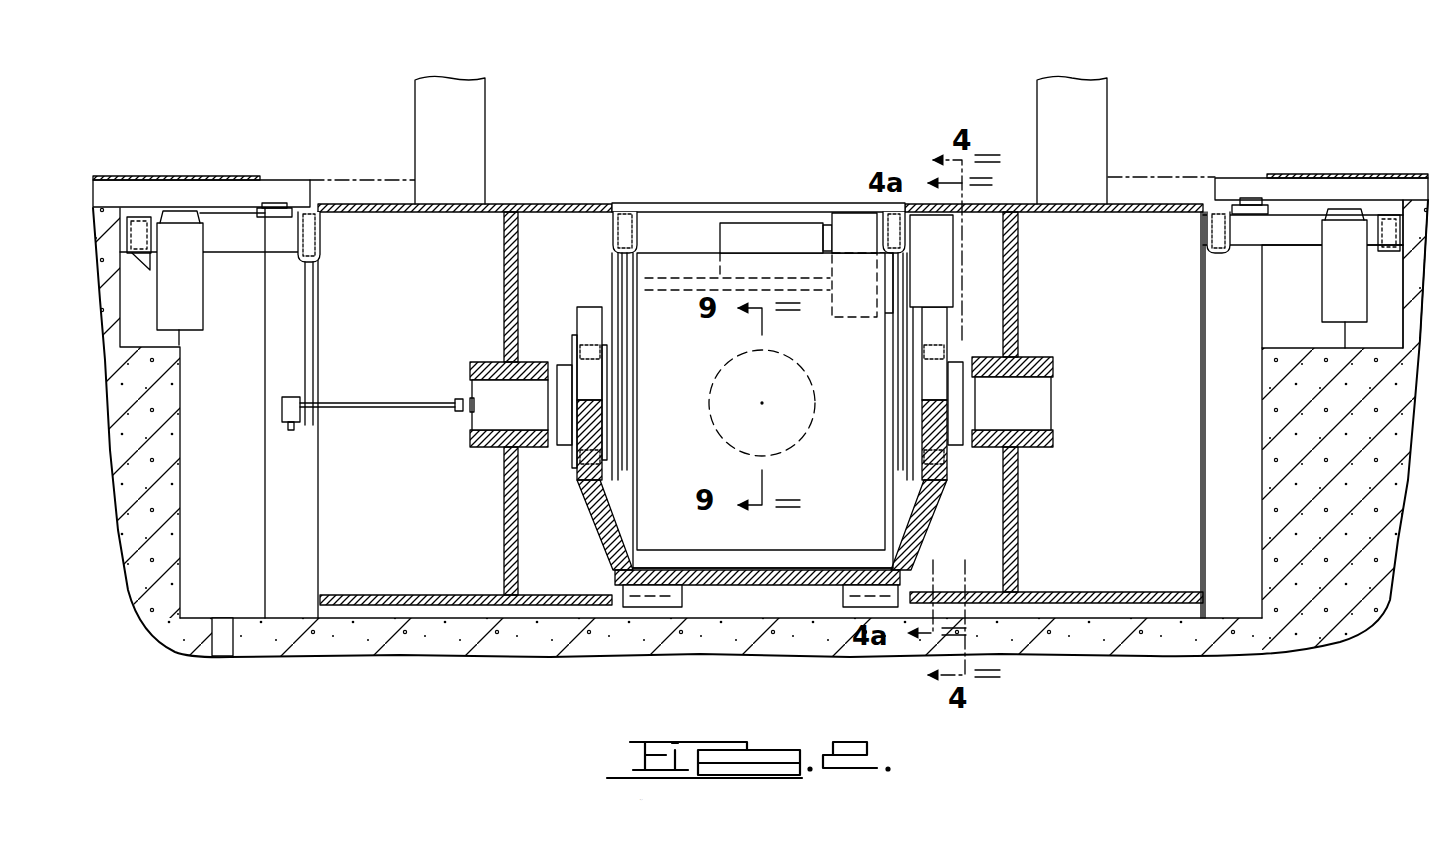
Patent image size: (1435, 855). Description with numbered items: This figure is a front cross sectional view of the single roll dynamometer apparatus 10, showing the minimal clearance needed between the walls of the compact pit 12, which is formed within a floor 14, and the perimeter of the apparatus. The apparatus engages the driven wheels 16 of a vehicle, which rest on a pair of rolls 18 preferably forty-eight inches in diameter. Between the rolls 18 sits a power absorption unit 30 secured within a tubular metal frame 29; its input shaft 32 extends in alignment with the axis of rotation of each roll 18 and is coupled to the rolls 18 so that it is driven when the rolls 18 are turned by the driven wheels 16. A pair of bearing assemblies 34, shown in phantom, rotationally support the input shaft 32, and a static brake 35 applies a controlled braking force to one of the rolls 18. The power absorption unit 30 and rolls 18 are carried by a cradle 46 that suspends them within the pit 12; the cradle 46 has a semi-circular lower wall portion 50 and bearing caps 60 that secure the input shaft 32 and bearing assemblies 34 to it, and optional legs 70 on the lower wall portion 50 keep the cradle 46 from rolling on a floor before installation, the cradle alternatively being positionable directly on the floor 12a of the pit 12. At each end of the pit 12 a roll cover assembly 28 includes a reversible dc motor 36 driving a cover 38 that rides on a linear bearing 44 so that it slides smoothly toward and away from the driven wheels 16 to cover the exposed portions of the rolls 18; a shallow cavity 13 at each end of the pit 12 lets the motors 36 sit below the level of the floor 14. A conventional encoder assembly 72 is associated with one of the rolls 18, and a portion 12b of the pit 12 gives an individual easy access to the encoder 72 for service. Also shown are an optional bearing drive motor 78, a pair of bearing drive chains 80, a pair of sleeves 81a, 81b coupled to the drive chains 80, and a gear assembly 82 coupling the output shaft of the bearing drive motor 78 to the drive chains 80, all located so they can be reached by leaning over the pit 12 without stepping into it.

The dynamometer apparatus 10 is at (746, 182).
The pit 12 is at (1242, 590).
The floor of the pit 12a is at (1100, 622).
The portion of the pit 12b is at (196, 604).
The shallow cavity 13 is at (162, 345).
The floor 14 is at (1416, 199).
The driven wheels 16 is at (428, 127).
The rolls 18 is at (388, 595).
The roll cover assemblies 28 is at (130, 178).
The tubular metal frame 29 is at (622, 205).
The power absorption unit 30 is at (690, 456).
The input shaft 32 is at (470, 372).
The bearing assemblies 34 is at (582, 478).
The static brake 35 is at (931, 261).
The reversible dc motor 36 is at (763, 278).
The cover 38 is at (178, 178).
The linear bearing 44 is at (150, 214).
The cradle 46 is at (702, 582).
The lower wall portion 50 is at (795, 576).
The bearing caps 60 is at (580, 312).
The legs 70 is at (646, 605).
The encoder assembly 72 is at (282, 406).
The bearing drive motor 78 is at (720, 240).
The bearing drive chains 80 is at (628, 322).
The sleeve 81a is at (898, 358).
The sleeve 81b is at (634, 352).
The gear assembly 82 is at (843, 214).